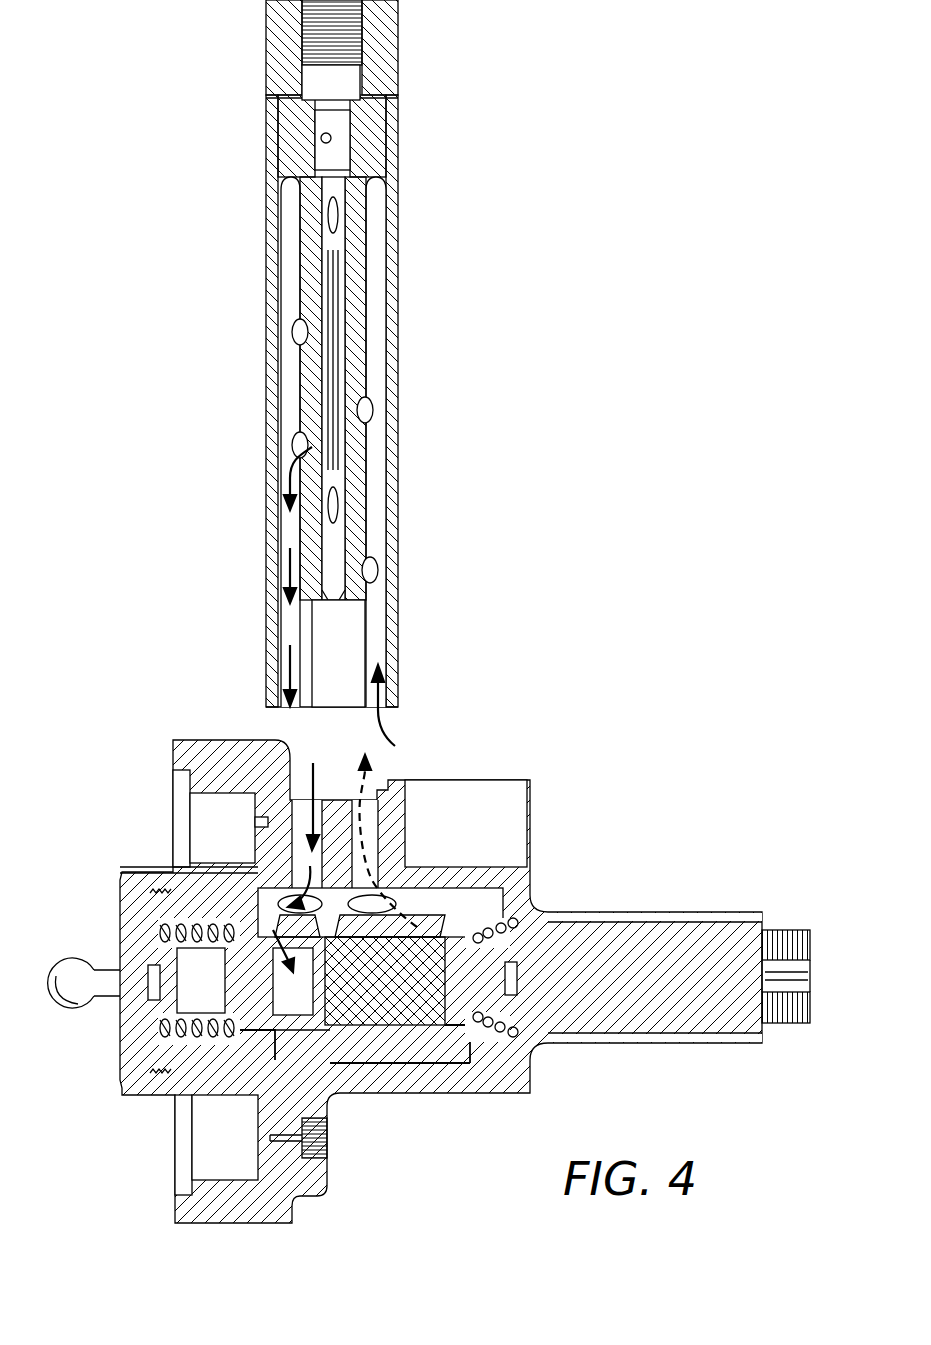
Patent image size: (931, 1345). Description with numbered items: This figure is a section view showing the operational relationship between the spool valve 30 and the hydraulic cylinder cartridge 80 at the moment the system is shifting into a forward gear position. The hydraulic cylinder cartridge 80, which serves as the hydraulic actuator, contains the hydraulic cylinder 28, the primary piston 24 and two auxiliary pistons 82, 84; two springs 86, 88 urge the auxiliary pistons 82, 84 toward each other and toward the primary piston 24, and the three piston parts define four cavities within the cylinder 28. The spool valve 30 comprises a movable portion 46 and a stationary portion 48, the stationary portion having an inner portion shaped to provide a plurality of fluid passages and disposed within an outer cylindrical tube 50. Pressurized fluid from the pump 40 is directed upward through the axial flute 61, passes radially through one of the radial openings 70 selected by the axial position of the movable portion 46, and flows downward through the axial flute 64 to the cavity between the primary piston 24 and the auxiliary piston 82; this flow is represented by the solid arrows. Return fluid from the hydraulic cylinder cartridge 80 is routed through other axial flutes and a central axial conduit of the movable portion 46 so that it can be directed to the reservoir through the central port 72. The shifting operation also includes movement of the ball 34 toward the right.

The primary piston 24 is at (377, 1018).
The hydraulic cylinder 28 is at (435, 1050).
The spool valve 30 is at (504, 301).
The ball 34 is at (80, 985).
The pump 40 is at (200, 1166).
The movable portion 46 is at (350, 385).
The stationary portion 48 is at (366, 352).
The outer cylindrical tube 50 is at (398, 60).
The axial flute 61 is at (388, 248).
The axial flute 64 is at (292, 216).
The radial openings 70 is at (300, 337).
The central port 72 is at (350, 657).
The hydraulic cylinder cartridge 80 is at (640, 847).
The auxiliary piston 82 is at (252, 1040).
The auxiliary piston 84 is at (487, 998).
The spring 86 is at (210, 948).
The spring 88 is at (515, 930).